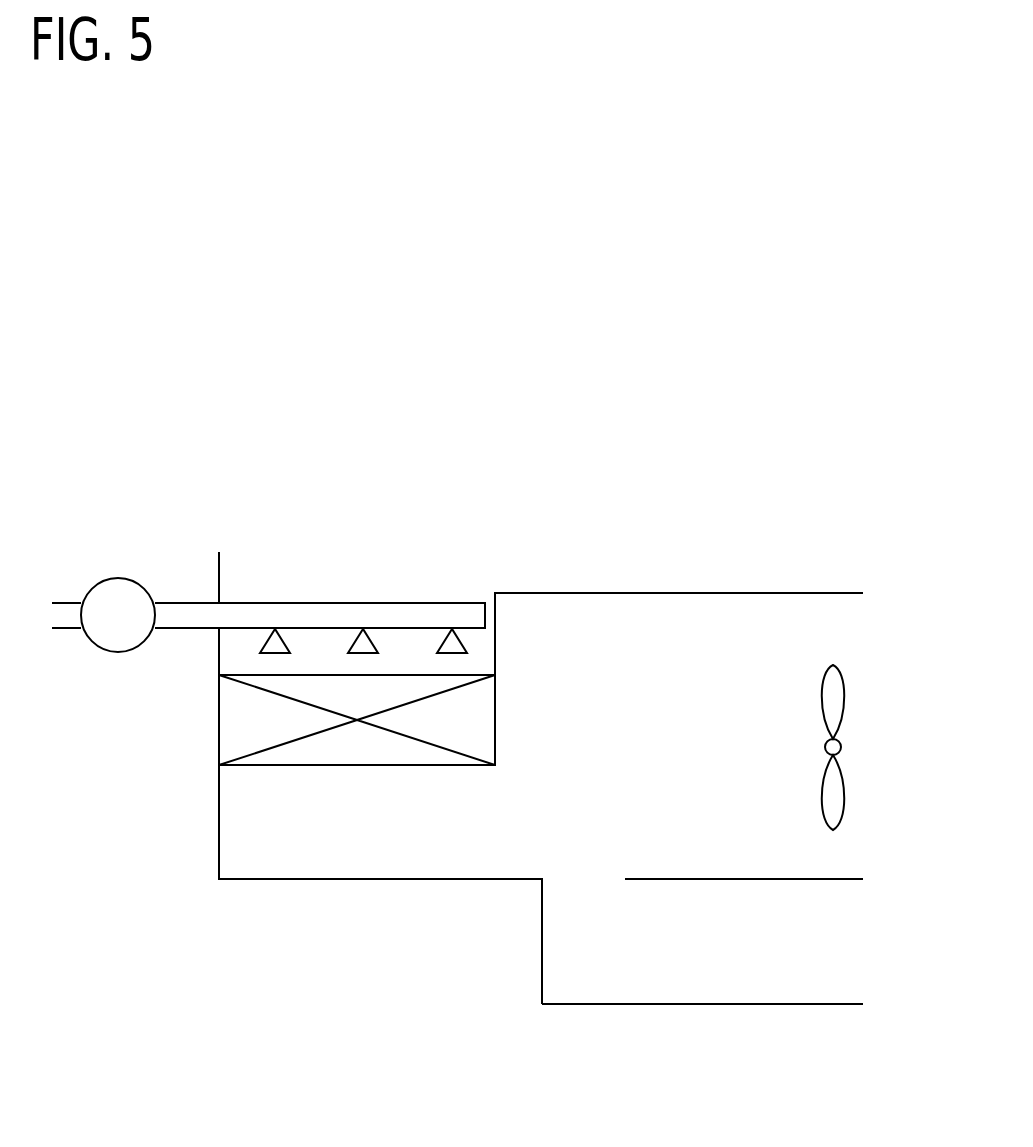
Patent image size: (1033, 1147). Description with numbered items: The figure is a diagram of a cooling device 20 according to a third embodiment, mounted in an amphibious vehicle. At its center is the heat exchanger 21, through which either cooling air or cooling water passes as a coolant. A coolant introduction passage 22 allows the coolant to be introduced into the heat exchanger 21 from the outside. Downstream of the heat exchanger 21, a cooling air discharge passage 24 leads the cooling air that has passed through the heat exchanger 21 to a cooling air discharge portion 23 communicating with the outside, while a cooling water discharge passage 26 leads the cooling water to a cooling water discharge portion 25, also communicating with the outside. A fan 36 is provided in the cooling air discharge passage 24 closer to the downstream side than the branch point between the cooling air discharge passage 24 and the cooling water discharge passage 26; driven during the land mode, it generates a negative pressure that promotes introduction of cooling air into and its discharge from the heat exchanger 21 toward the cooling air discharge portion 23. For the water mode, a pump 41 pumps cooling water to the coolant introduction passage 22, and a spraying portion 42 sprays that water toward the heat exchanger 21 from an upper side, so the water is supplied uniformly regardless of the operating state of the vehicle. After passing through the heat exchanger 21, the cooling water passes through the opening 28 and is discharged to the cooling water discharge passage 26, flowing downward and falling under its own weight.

The cooling device 20 is at (365, 425).
The heat exchanger 21 is at (233, 727).
The coolant introduction passage 22 is at (217, 572).
The cooling air discharge portion 23 is at (881, 678).
The cooling air discharge passage 24 is at (683, 593).
The cooling water discharge portion 25 is at (857, 930).
The cooling water discharge passage 26 is at (737, 1005).
The opening 28 is at (590, 903).
The fan 36 is at (833, 665).
The pump 41 is at (118, 578).
The spraying portion 42 is at (363, 603).